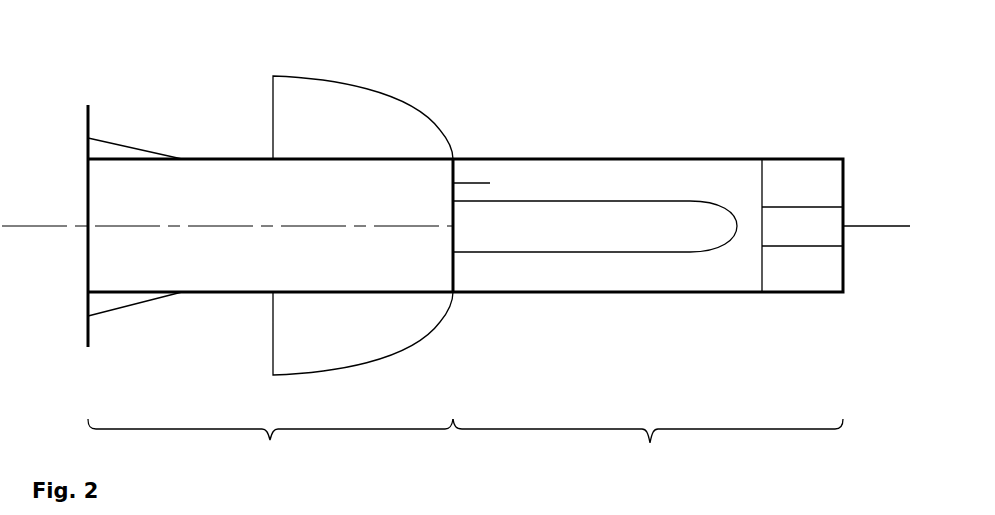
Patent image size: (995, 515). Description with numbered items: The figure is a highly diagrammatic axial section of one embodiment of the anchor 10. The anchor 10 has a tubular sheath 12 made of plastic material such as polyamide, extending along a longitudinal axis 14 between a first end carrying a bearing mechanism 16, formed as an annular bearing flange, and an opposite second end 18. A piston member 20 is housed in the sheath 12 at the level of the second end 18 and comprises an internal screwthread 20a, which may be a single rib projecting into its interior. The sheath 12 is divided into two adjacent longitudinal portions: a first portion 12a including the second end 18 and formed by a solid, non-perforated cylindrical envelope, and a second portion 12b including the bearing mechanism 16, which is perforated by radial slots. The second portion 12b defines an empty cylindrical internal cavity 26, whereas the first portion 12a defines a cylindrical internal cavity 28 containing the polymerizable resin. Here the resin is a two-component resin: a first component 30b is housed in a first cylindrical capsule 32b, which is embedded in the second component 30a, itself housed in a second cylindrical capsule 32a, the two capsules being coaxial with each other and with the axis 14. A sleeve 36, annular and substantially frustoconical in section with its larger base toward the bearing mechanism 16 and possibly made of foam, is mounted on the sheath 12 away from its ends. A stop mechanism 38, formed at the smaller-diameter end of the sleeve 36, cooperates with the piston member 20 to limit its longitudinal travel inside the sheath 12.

The anchor 10 is at (662, 152).
The tubular sheath 12 is at (555, 294).
The first portion 12a is at (648, 445).
The second portion 12b is at (270, 446).
The longitudinal axis 14 is at (866, 226).
The bearing mechanism 16 is at (88, 123).
The second end 18 is at (820, 158).
The piston member 20 is at (800, 263).
The internal screwthread 20a is at (798, 222).
The internal cavity 26 is at (279, 195).
The internal cavity 28 is at (522, 162).
The resin component 30a is at (659, 182).
The hardener component 30b is at (595, 226).
The second capsule 32a is at (453, 183).
The first capsule 32b is at (485, 254).
The sleeve 36 is at (378, 96).
The stop mechanism 38 is at (450, 291).